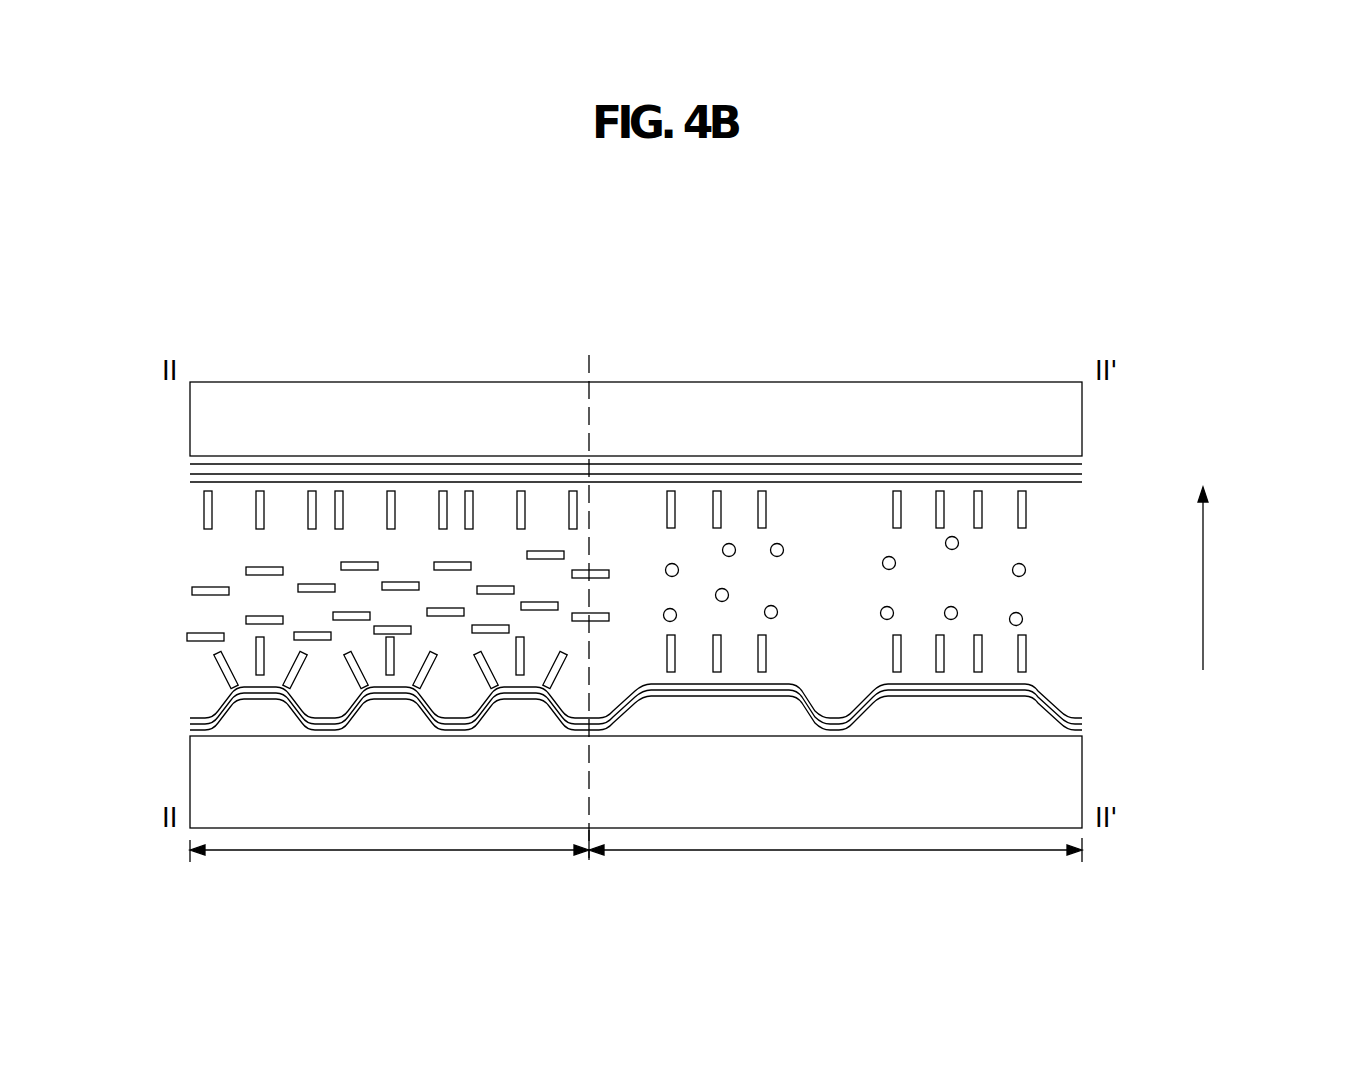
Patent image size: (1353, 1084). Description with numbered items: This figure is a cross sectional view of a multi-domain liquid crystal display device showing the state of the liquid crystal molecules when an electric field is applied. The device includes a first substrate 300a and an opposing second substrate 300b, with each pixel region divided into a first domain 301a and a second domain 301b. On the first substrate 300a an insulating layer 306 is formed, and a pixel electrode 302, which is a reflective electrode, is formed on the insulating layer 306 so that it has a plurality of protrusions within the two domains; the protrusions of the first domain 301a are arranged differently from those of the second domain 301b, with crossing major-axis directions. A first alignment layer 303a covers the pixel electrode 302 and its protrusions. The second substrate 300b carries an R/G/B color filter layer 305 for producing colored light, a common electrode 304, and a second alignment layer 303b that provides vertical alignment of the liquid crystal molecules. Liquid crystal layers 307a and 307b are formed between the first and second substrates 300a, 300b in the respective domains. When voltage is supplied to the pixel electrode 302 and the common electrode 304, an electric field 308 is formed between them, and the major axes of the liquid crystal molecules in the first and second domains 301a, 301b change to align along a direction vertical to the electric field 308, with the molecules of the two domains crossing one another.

The first substrate 300a is at (210, 772).
The second substrate 300b is at (885, 398).
The first domain 301a is at (389, 860).
The second domain 301b is at (835, 865).
The pixel electrode 302 is at (1063, 710).
The first alignment layer 303a is at (1049, 687).
The second alignment layer 303b is at (1083, 479).
The common electrode 304 is at (1083, 466).
The R/G/B color filter layer 305 is at (1083, 456).
The insulating layer 306 is at (1083, 733).
The liquid crystal layer 307a is at (190, 495).
The liquid crystal layer 307b is at (1030, 495).
The electric field 308 is at (1207, 578).